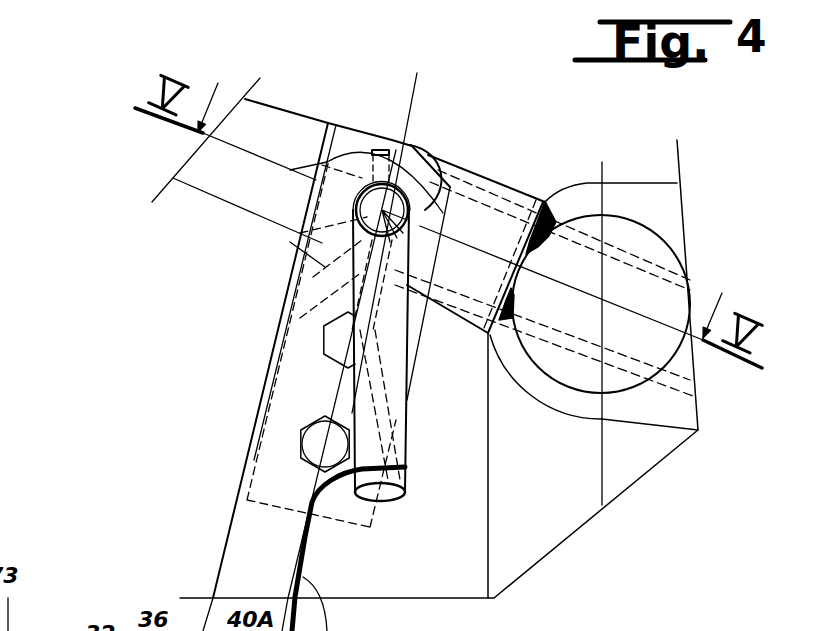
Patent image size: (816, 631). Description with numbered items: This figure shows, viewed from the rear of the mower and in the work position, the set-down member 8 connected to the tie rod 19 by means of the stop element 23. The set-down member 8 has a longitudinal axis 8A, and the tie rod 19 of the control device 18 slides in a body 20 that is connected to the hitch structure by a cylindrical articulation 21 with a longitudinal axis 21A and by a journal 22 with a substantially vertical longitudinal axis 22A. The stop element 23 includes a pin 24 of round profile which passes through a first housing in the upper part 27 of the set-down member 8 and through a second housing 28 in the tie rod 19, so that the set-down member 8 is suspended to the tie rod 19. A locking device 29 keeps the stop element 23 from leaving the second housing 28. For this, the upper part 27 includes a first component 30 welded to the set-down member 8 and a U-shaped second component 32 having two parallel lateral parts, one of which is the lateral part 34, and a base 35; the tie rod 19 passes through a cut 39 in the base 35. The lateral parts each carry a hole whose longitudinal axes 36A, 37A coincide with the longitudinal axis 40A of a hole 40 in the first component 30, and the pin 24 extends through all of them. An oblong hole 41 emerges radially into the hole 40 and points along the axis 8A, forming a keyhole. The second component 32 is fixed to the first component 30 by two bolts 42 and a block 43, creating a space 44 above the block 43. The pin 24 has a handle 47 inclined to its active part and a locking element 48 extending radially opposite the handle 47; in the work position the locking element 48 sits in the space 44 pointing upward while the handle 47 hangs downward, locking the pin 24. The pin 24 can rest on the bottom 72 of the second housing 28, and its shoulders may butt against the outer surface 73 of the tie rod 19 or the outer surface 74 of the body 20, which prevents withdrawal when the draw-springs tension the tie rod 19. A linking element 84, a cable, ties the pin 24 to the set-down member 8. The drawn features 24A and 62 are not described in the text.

The set-down member 8 is at (223, 547).
The longitudinal axis of the set-down member 8A is at (415, 90).
The control device 18 is at (113, 281).
The tie rod 19 is at (213, 188).
The body 20 is at (652, 233).
The cylindrical articulation 21 is at (633, 226).
The longitudinal axis of the cylindrical articulation 21A is at (620, 303).
The journal 22 is at (527, 552).
The longitudinal axis of the journal 22A is at (603, 480).
The stop element 23 is at (408, 500).
The pin 24 is at (405, 453).
The pin head 24A is at (303, 218).
The upper part of the set-down member 27 is at (152, 365).
The second housing 28 is at (428, 172).
The locking device 29 is at (472, 113).
The first component 30 is at (418, 317).
The second component 32 is at (348, 133).
The lateral part 34 is at (365, 147).
The base 35 is at (283, 312).
The longitudinal axis of the hole 36A is at (420, 235).
The longitudinal axis of the hole 37A is at (415, 290).
The cut 39 is at (317, 133).
The hole 40 is at (445, 212).
The longitudinal axis of the hole 40A is at (512, 195).
The oblong hole 41 is at (290, 330).
The bolts 42 is at (305, 443).
The block 43 is at (405, 385).
The space 44 is at (293, 242).
The handle 47 is at (405, 431).
The locking element 48 is at (408, 150).
The clamp 62 is at (303, 55).
The bottom of the second housing 72 is at (383, 244).
The outer surface of the tie rod 73 is at (200, 190).
The outer surface of the body 74 is at (512, 178).
The linking element 84 is at (313, 533).